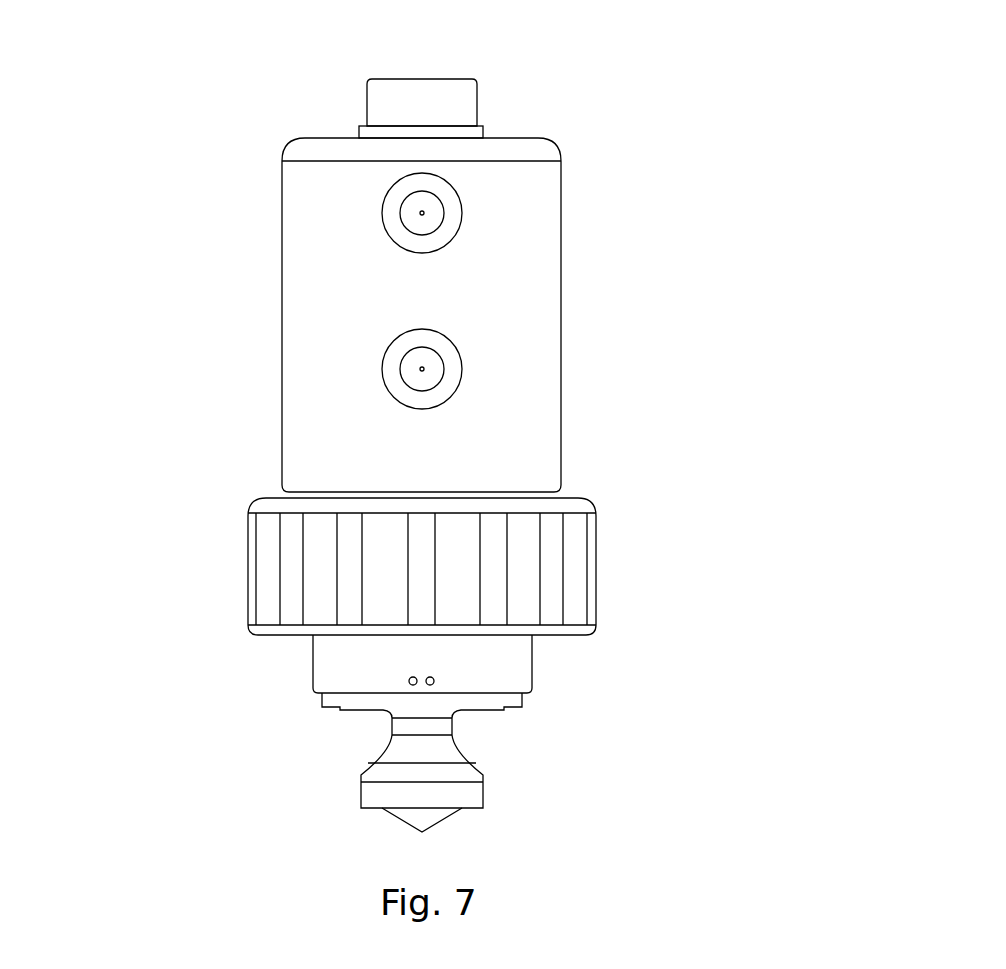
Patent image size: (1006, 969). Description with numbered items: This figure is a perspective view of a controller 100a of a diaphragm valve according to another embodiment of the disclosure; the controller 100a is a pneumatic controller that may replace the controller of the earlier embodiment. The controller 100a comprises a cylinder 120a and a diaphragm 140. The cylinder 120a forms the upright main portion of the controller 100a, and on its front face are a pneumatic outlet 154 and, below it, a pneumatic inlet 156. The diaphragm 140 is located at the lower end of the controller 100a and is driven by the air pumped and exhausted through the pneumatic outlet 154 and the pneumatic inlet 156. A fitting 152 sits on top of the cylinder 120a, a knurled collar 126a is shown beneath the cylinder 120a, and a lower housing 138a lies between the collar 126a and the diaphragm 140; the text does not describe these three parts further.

The controller 100a is at (1005, 150).
The cylinder 120a is at (561, 227).
The knurled collar 126a is at (590, 502).
The adapter housing 138a is at (367, 661).
The diaphragm 140 is at (395, 741).
The top connector 152 is at (422, 79).
The pneumatic outlet 154 is at (422, 213).
The pneumatic inlet 156 is at (422, 369).